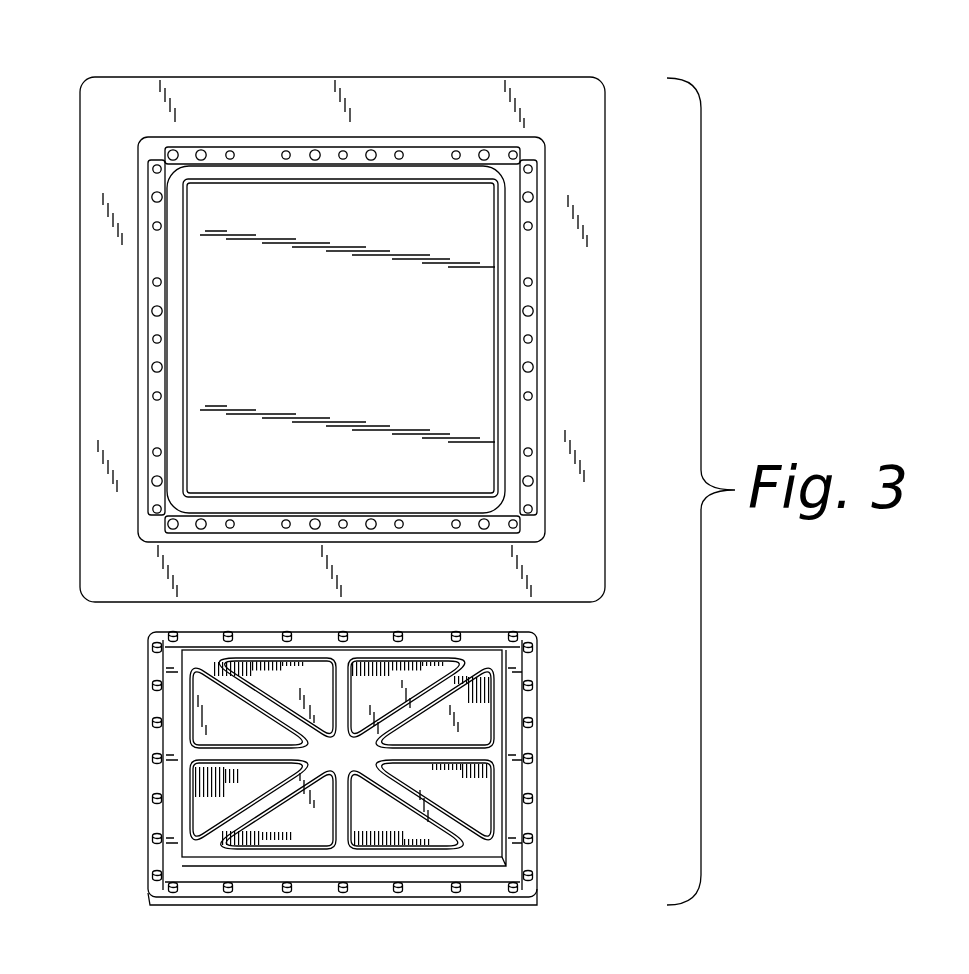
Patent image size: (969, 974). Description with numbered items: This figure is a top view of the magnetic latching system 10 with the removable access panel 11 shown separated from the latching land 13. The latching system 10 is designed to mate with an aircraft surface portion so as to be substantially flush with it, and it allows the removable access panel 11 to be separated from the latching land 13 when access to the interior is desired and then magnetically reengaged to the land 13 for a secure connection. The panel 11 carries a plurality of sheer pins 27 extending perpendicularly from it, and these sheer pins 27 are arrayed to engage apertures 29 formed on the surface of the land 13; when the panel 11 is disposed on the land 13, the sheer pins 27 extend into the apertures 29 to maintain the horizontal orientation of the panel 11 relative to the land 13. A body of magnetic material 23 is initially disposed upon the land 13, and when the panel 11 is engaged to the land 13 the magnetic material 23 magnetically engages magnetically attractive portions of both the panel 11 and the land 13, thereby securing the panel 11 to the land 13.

The magnetic latching system 10 is at (348, 56).
The latching land 13 is at (247, 97).
The apertures 29 is at (151, 312).
The magnetic material 23 is at (178, 427).
The removable access panel 11 is at (512, 705).
The sheer pins 27 is at (152, 799).